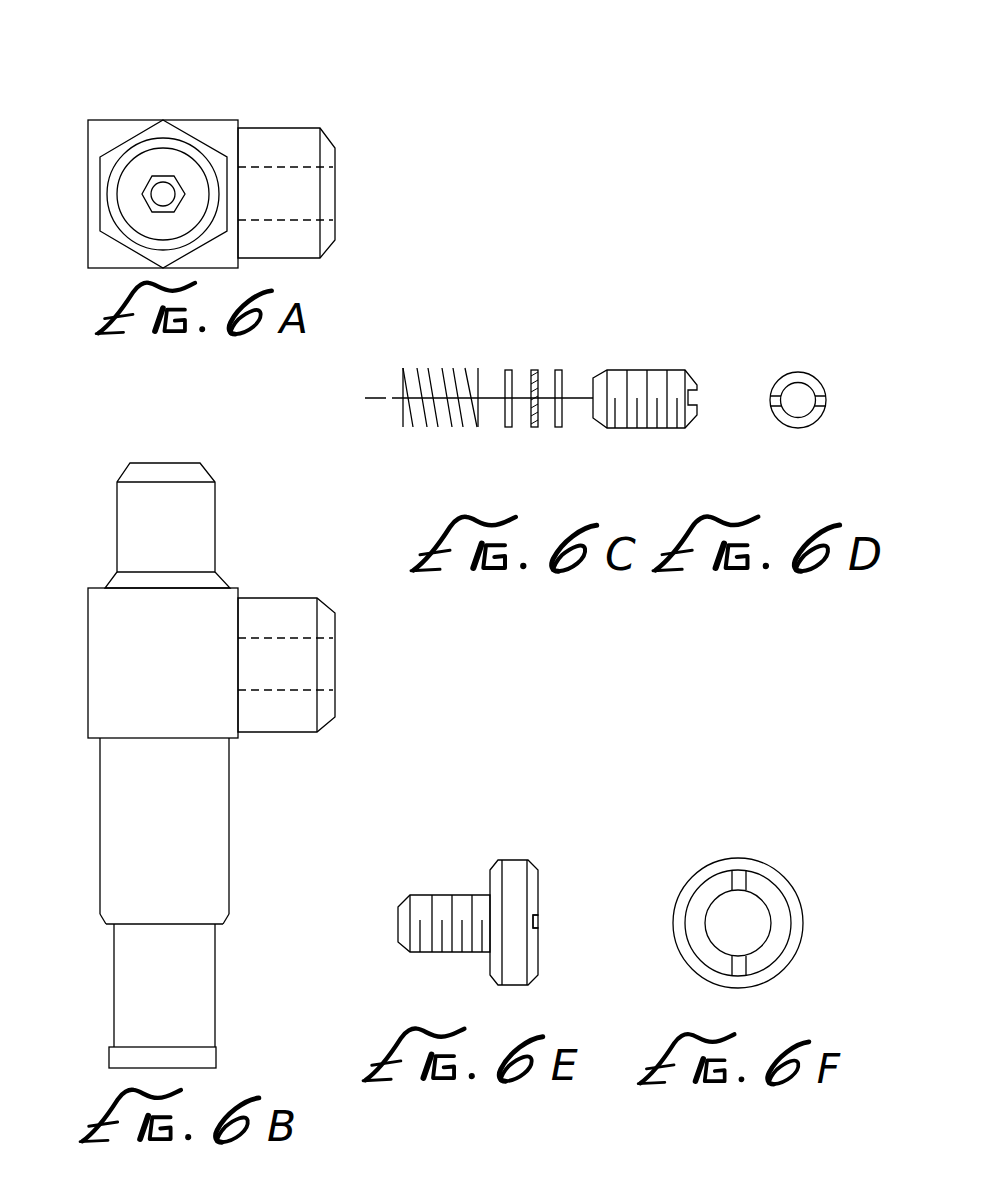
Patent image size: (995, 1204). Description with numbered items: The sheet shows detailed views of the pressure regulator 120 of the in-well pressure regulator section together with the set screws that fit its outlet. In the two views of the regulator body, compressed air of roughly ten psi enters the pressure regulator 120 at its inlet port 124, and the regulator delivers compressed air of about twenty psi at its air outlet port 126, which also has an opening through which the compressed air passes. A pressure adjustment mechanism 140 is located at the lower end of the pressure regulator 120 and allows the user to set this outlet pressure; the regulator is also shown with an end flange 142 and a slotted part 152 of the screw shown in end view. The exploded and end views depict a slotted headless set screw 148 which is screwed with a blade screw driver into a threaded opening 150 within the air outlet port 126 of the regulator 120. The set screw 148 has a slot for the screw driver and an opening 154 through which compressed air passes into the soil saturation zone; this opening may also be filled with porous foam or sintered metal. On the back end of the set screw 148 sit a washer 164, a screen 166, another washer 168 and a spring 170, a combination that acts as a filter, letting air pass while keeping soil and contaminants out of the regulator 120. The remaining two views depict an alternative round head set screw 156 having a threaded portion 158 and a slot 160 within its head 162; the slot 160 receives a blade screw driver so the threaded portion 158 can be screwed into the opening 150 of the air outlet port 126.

In FIG. 6A, the pressure regulator 120 is at (92, 284).
In FIG. 6B, the pressure regulator 120 is at (172, 686).
In FIG. 6B, the inlet port 124 is at (170, 463).
In FIG. 6A, the air outlet port 126 is at (297, 258).
In FIG. 6B, the air outlet port 126 is at (277, 732).
In FIG. 6A, the pressure adjustment mechanism 140 is at (178, 183).
In FIG. 6A, the flange 142 is at (117, 120).
In FIG. 6B, the flange 142 is at (107, 1057).
In FIG. 6C, the slotted headless set screw 148 is at (660, 370).
In FIG. 6A, the threaded opening 150 is at (273, 167).
In FIG. 6B, the threaded opening 150 is at (273, 638).
In FIG. 6D, the ring 152 is at (828, 399).
In FIG. 6D, the opening 154 is at (797, 395).
In FIG. 6E, the round head set screw 156 is at (507, 860).
In FIG. 6F, the round head set screw 156 is at (692, 880).
In FIG. 6E, the threaded portion 158 is at (468, 892).
In FIG. 6E, the slot 160 is at (538, 923).
In FIG. 6F, the slot 160 is at (735, 880).
In FIG. 6E, the head 162 is at (508, 987).
In FIG. 6C, the washer 164 is at (558, 428).
In FIG. 6C, the screen 166 is at (533, 370).
In FIG. 6C, the washer 168 is at (508, 428).
In FIG. 6C, the spring 170 is at (440, 427).